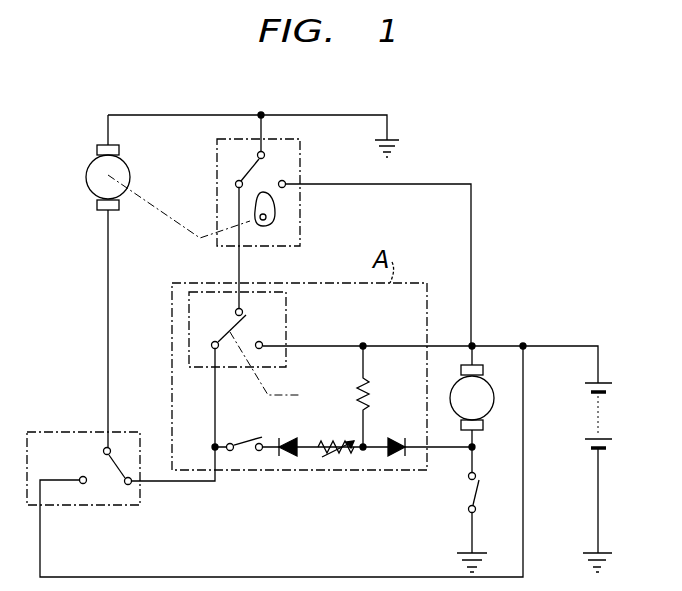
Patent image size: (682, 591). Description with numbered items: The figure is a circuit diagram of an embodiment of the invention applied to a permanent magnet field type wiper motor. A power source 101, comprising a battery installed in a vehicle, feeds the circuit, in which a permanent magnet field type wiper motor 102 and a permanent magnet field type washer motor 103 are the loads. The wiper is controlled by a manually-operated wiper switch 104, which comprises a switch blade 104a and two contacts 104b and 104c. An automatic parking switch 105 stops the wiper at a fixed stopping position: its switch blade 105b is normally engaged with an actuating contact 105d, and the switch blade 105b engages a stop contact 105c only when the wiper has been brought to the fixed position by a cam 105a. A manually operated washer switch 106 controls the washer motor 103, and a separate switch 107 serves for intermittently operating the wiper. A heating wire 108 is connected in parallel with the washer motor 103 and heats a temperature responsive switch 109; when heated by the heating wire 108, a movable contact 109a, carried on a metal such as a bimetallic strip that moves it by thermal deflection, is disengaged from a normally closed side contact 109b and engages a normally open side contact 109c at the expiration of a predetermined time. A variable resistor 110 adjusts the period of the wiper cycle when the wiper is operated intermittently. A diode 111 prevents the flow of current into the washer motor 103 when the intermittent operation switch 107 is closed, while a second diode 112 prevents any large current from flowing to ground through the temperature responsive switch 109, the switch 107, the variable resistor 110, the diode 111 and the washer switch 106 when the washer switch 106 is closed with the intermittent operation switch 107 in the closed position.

The power source 101 is at (603, 402).
The wiper motor 102 is at (86, 180).
The washer motor 103 is at (492, 412).
The wiper switch 104 is at (75, 432).
The switch blade 104a is at (115, 462).
The contact 104b is at (85, 484).
The contact 104c is at (131, 484).
The automatic parking switch 105 is at (228, 140).
The cam 105a is at (276, 211).
The switch blade 105b is at (235, 183).
The stop contact 105c is at (263, 151).
The actuating contact 105d is at (286, 181).
The washer switch 106 is at (478, 490).
The intermittent operation switch 107 is at (242, 451).
The heating wire 108 is at (370, 384).
The temperature responsive switch 109 is at (189, 310).
The movable contact 109a is at (211, 343).
The normally closed side contact 109b is at (243, 309).
The normally open side contact 109c is at (263, 338).
The variable resistor 110 is at (341, 458).
The diode 111 is at (400, 458).
The diode 112 is at (291, 458).